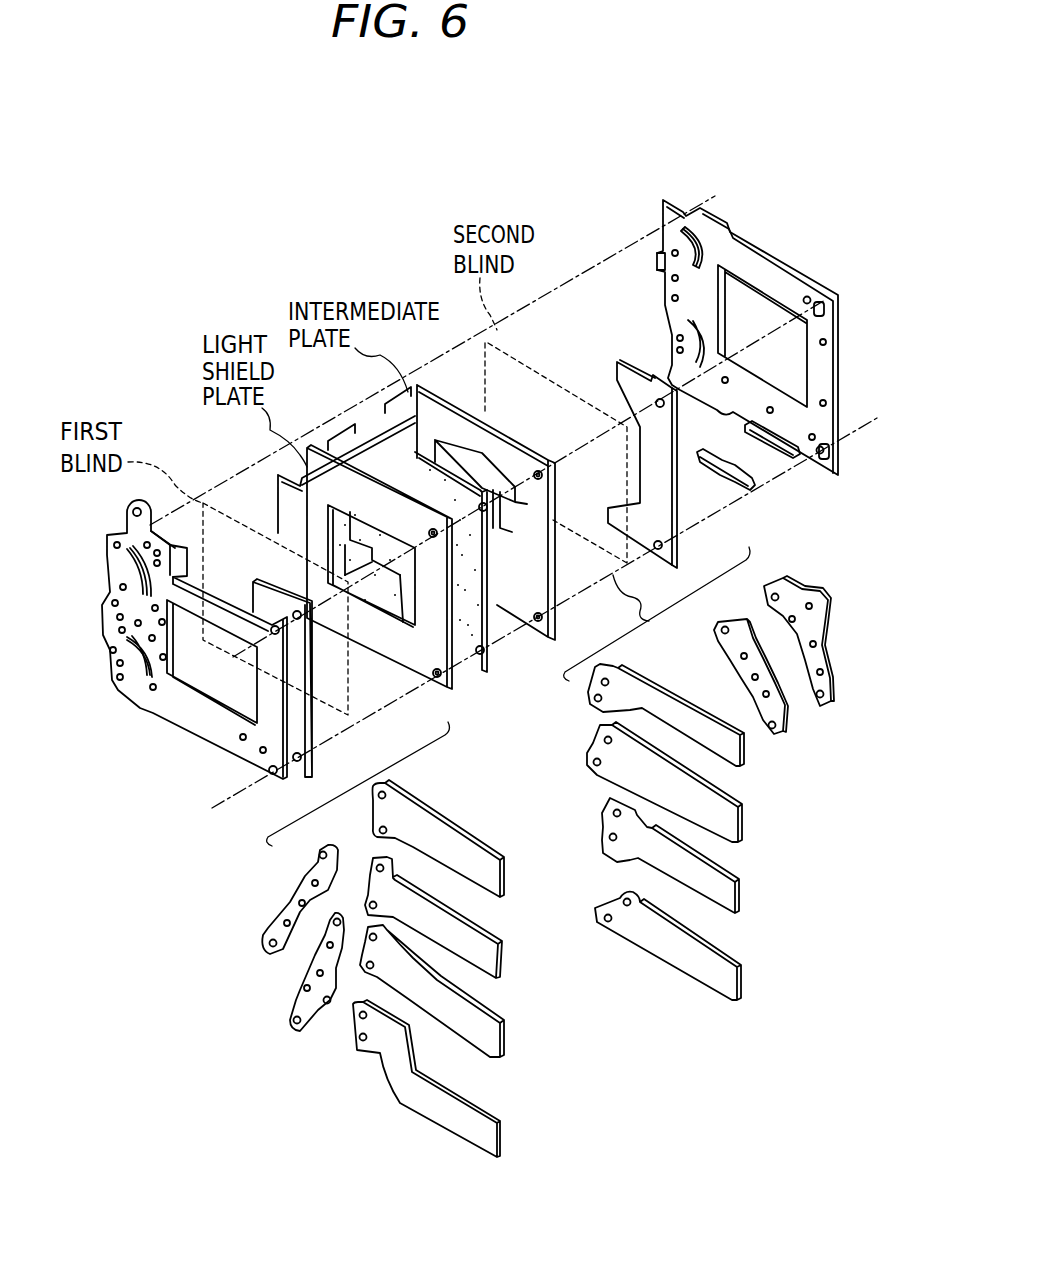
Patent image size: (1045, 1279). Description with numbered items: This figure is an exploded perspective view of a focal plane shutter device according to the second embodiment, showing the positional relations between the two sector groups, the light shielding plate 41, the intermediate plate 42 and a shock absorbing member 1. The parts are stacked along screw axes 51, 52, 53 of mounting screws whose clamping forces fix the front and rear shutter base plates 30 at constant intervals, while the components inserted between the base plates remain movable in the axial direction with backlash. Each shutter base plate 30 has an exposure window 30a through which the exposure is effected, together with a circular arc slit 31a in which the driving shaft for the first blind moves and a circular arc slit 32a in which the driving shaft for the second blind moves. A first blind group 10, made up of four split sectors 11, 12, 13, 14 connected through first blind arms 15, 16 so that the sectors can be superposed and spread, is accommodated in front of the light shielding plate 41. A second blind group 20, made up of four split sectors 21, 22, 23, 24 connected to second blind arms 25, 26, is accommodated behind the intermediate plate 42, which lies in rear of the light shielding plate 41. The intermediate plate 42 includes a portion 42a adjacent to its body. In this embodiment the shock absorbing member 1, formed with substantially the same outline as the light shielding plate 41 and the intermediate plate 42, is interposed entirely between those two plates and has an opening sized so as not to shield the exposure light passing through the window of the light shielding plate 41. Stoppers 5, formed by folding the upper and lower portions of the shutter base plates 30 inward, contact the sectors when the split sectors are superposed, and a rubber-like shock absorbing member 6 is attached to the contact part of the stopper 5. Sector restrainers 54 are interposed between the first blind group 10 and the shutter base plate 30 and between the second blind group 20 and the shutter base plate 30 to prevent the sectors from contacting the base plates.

The shock absorbing member 1 is at (458, 648).
The stopper 5 is at (790, 457).
The shock absorbing member 6 is at (730, 477).
The first blind group 10 is at (350, 1060).
The split sector 11 is at (455, 847).
The split sector 12 is at (473, 937).
The split sector 13 is at (473, 1020).
The split sector 14 is at (473, 1118).
The first blind arm 15 is at (288, 910).
The first blind arm 16 is at (298, 998).
The second blind group 20 is at (770, 772).
The split sector 21 is at (651, 939).
The split sector 22 is at (724, 896).
The split sector 23 is at (727, 822).
The split sector 24 is at (657, 686).
The second blind arm 25 is at (742, 630).
The second blind arm 26 is at (803, 597).
The shutter base plate 30 is at (203, 717).
The exposure window 30a is at (390, 613).
The circular arc slit 31a is at (125, 688).
The circular arc slit 32a is at (112, 567).
The light shielding plate 41 is at (420, 647).
The intermediate plate 42 is at (525, 593).
The bent tab of intermediate plate 42a is at (513, 535).
The screw axis 51 is at (223, 800).
The screw axis 52 is at (580, 450).
The screw axis 53 is at (253, 463).
The sector restrainer 54 is at (303, 780).